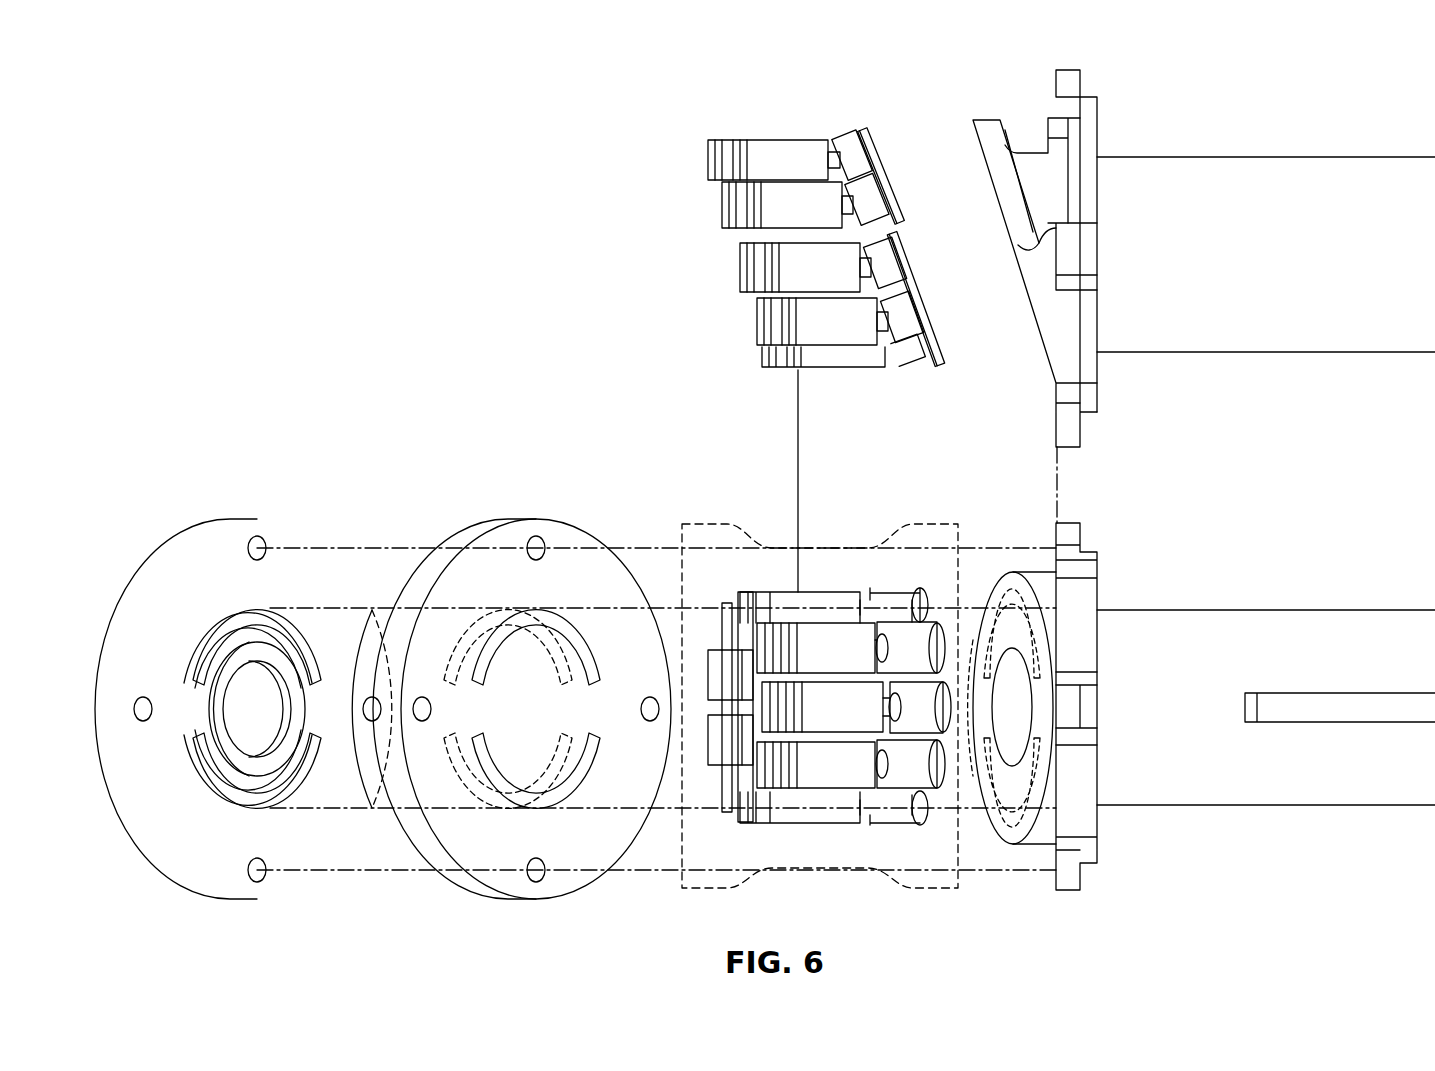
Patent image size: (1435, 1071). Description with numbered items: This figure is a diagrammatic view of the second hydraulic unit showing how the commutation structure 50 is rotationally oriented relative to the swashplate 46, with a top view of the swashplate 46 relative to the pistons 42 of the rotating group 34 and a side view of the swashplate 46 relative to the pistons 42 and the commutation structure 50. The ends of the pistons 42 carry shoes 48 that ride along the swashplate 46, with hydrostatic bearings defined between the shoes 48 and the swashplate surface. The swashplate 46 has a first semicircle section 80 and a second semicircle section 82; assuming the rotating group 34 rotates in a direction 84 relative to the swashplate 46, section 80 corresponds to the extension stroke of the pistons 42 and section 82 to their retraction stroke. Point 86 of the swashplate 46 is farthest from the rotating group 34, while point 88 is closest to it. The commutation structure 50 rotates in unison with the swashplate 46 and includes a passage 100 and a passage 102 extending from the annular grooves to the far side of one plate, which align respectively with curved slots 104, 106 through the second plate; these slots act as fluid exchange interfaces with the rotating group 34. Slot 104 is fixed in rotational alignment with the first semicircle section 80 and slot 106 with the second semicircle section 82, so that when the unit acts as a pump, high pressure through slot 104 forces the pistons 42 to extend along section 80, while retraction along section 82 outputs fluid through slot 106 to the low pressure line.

The rotating group 34 is at (827, 836).
The pistons 42 is at (838, 598).
The swashplate 46 is at (1079, 808).
The shoes 48 is at (898, 606).
The commutation structure 50 is at (402, 880).
The first semicircle section 80 is at (1015, 830).
The second semicircle section 82 is at (1003, 590).
The direction 84 is at (984, 836).
The point 86 is at (1060, 708).
The point 88 is at (975, 702).
The passage 100 is at (287, 797).
The passage 102 is at (270, 625).
The curved slot 104 is at (565, 793).
The curved slot 106 is at (555, 618).